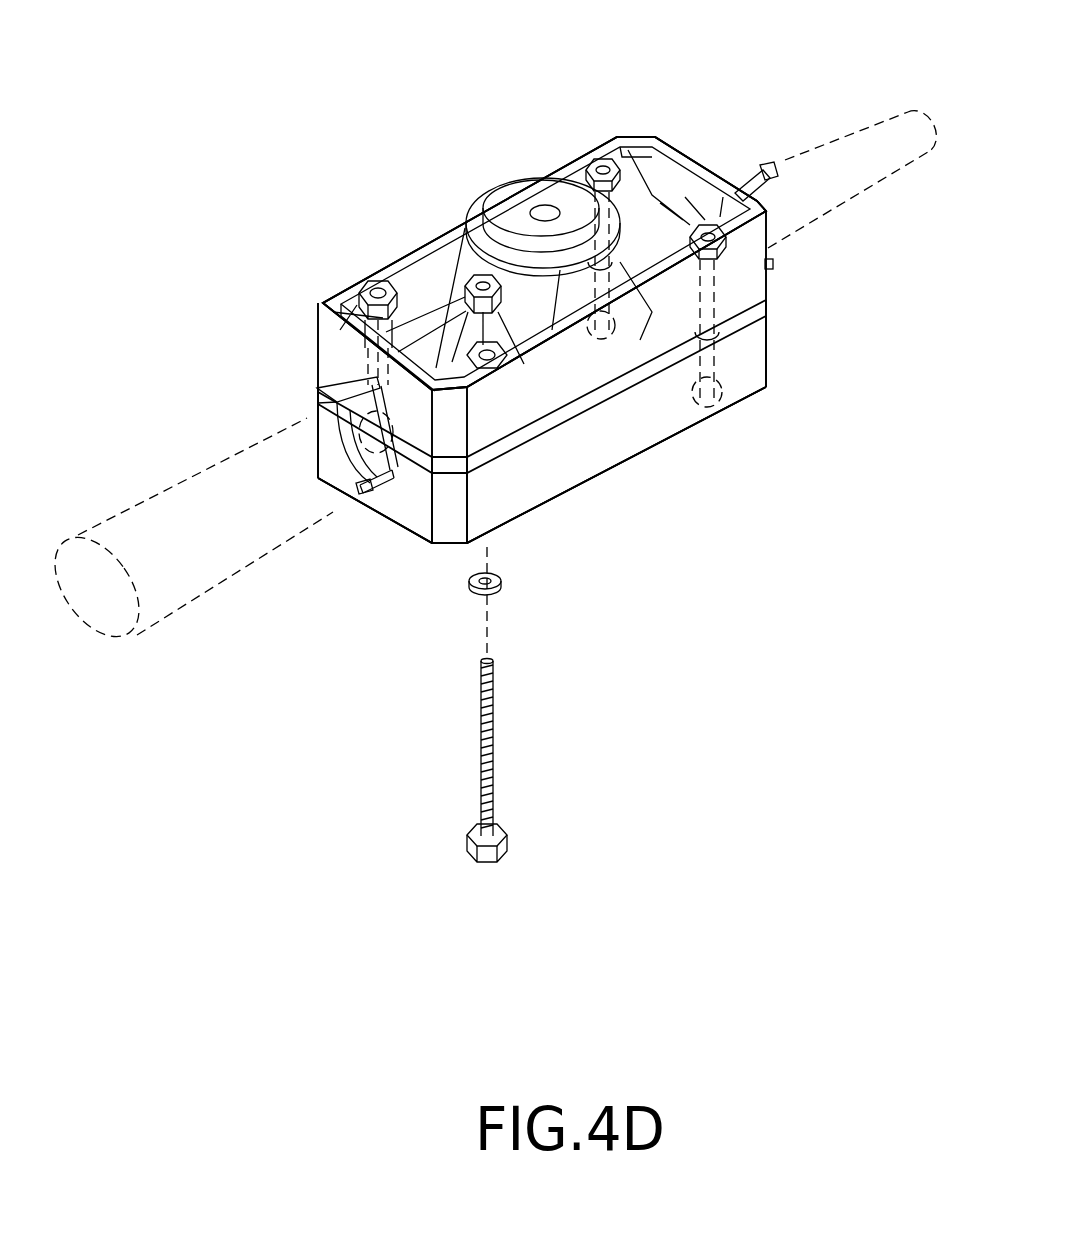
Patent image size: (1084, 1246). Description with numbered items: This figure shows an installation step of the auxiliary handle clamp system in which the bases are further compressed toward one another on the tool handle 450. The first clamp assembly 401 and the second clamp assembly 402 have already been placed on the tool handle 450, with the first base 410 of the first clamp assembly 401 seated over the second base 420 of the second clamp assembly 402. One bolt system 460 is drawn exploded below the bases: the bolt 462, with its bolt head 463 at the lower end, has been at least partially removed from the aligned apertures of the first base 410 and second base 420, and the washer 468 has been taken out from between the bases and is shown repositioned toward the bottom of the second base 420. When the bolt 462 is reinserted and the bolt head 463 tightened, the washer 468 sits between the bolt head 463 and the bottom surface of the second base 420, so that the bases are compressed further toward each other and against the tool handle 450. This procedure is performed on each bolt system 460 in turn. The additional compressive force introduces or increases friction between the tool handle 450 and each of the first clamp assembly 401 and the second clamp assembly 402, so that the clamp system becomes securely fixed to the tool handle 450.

The first clamp assembly 401 is at (735, 100).
The second clamp assembly 402 is at (812, 291).
The first base 410 is at (667, 150).
The second base 420 is at (767, 335).
The tool handle 450 is at (118, 515).
The bolt system 460 is at (584, 134).
The bolt 462 is at (534, 802).
The bolt head 463 is at (502, 857).
The washer 468 is at (501, 585).